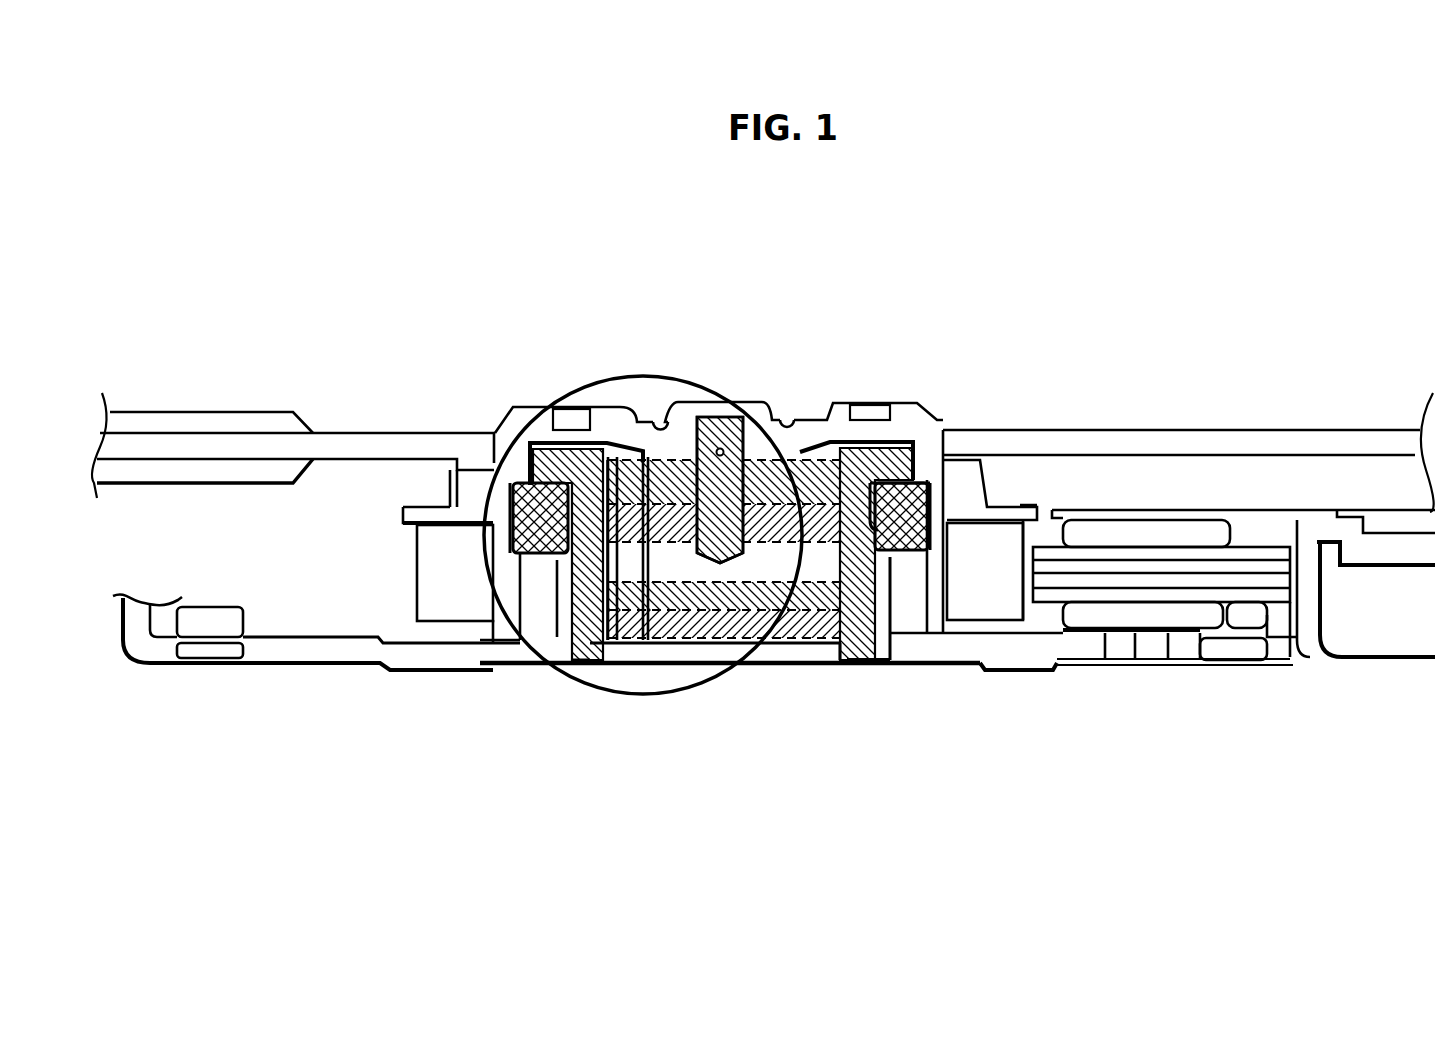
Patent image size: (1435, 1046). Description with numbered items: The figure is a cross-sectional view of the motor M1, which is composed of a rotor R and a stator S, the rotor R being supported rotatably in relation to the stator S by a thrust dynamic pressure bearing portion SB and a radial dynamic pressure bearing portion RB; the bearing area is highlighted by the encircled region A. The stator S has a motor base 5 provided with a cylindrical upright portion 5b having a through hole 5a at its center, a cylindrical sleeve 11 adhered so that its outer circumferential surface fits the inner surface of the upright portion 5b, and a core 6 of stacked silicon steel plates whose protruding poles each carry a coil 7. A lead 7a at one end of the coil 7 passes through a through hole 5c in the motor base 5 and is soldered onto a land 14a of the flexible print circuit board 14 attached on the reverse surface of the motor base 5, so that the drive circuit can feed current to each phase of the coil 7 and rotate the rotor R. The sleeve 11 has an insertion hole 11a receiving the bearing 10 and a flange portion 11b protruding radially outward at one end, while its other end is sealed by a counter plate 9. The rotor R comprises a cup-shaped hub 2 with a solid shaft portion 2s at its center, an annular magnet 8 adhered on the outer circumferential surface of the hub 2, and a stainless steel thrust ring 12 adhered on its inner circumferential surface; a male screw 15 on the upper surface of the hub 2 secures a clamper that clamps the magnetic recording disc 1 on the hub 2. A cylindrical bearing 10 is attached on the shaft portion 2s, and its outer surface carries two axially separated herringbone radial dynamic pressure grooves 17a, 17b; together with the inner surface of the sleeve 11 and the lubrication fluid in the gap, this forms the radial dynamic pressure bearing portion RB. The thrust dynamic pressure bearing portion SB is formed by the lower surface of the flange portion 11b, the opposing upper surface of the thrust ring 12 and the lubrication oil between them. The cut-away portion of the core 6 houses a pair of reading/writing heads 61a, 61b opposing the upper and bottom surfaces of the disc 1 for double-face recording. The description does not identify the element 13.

The magnetic recording disc 1 is at (375, 432).
The hub 2 is at (500, 424).
The shaft portion 2s is at (663, 575).
The motor base 5 is at (264, 657).
The through hole 5a is at (886, 593).
The cylindrical upright portion 5b is at (898, 598).
The through hole 5c is at (1110, 647).
The core 6 is at (1262, 548).
The coil 7 is at (1178, 620).
The lead 7a is at (1133, 640).
The magnet 8 is at (437, 540).
The counter plate 9 is at (776, 668).
The bearing 10 is at (637, 448).
The sleeve 11 is at (907, 455).
The insertion hole 11a is at (580, 652).
The flange portion 11b is at (915, 458).
The thrust ring 12 is at (930, 492).
The rotor magnet 13 is at (754, 575).
The flexible print circuit board 14 is at (1290, 662).
The land 14a is at (1135, 670).
The male screw 15 is at (733, 420).
The radial dynamic pressure groove 17a is at (807, 455).
The radial dynamic pressure groove 17b is at (703, 630).
The reading/writing head 61a is at (313, 427).
The reading/writing head 61b is at (313, 480).
The enlarged region A is at (670, 375).
The rotor R is at (777, 305).
The stator S is at (947, 706).
The motor M1 is at (1153, 306).
The thrust dynamic pressure bearing portion SB is at (543, 505).
The radial dynamic pressure bearing portion RB is at (607, 648).